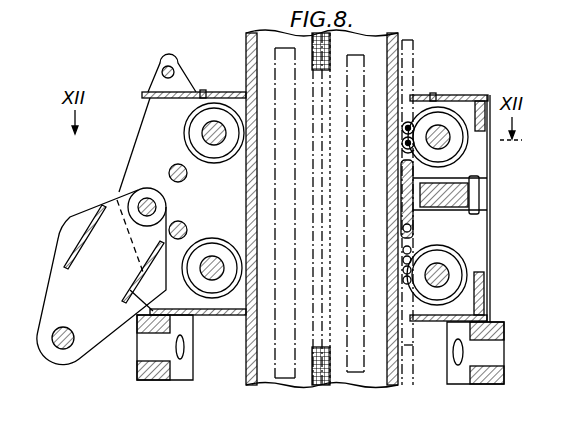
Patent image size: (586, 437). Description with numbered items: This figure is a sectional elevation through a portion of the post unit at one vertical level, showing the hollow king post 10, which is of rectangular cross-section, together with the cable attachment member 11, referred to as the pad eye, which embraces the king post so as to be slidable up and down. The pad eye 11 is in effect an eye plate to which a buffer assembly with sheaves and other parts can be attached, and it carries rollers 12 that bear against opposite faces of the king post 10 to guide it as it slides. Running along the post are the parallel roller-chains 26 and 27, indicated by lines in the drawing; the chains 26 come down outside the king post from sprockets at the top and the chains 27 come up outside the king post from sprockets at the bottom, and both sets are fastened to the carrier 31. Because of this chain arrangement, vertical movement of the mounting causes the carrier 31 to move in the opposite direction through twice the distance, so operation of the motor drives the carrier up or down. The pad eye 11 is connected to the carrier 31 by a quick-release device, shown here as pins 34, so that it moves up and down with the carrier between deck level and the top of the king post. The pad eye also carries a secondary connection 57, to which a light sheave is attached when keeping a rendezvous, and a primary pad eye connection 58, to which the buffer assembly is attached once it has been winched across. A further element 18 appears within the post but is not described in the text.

The king post 10 is at (250, 62).
The cable attachment member 11 is at (224, 91).
The rollers 12 is at (193, 125).
The rod 18 is at (320, 172).
The roller-chains 26 is at (272, 226).
The roller-chains 27 is at (413, 345).
The carrier 31 is at (405, 178).
The pins 34 is at (478, 182).
The secondary connection 57 is at (158, 67).
The primary pad eye connection 58 is at (93, 333).